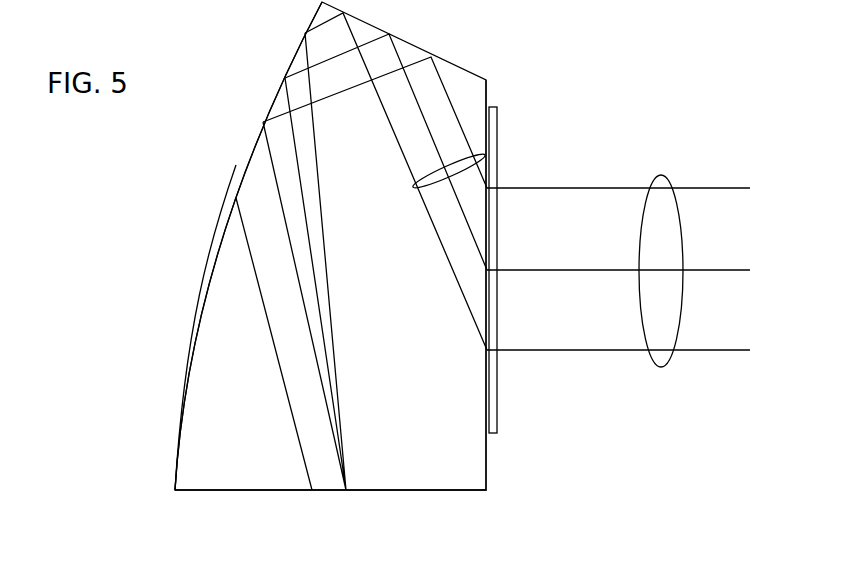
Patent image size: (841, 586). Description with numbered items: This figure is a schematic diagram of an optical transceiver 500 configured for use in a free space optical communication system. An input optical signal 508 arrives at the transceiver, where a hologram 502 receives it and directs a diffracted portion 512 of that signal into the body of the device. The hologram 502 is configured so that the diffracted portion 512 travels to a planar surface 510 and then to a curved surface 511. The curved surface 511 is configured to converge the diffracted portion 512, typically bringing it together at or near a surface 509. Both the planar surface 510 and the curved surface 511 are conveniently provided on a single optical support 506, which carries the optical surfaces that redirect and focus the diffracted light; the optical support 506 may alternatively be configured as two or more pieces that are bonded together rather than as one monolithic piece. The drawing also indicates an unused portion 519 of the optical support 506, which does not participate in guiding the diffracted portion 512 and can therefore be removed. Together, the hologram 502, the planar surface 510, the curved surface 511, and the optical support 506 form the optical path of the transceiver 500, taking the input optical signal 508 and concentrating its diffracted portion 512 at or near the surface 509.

The optical transceiver 500 is at (686, 36).
The hologram 502 is at (489, 107).
The optical support 506 is at (400, 442).
The input optical signal 508 is at (662, 175).
The surface 509 is at (267, 492).
The planar surface 510 is at (467, 63).
The curved surface 511 is at (203, 305).
The diffracted portion 512 is at (495, 145).
The unused portion 519 is at (195, 430).